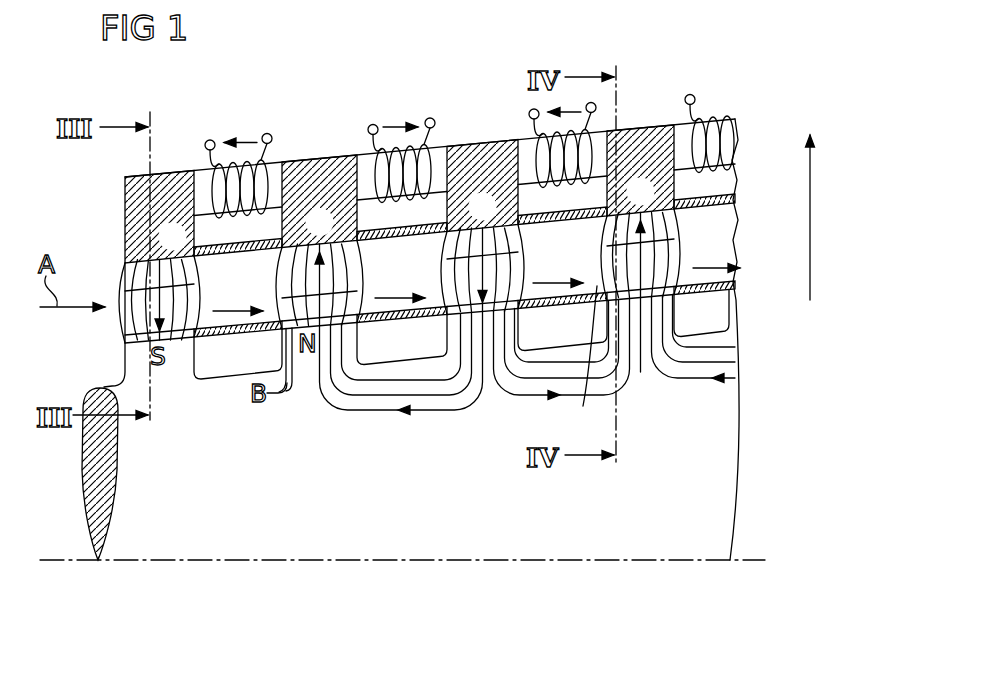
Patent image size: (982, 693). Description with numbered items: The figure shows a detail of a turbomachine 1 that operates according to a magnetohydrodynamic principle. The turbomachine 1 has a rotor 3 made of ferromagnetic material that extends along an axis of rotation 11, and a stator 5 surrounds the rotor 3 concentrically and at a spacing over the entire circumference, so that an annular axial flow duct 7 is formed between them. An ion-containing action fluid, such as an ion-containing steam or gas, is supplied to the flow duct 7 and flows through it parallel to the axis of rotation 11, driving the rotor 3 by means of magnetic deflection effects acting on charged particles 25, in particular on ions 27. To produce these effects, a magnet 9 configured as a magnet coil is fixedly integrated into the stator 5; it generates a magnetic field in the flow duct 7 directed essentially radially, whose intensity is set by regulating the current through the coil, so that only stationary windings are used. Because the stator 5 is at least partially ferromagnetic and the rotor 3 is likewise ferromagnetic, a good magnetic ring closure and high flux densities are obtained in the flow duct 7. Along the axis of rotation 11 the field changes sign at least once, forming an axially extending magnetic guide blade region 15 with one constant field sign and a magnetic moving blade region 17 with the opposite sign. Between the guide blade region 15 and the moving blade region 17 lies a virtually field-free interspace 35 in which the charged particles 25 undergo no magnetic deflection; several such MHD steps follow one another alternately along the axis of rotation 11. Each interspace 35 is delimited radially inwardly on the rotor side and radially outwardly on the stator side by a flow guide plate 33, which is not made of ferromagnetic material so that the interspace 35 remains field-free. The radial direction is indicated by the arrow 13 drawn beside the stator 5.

The turbomachine 1 is at (318, 100).
The rotor 3 is at (730, 462).
The stator 5 is at (483, 146).
The annular axial flow duct 7 is at (265, 340).
The magnet 9 is at (217, 152).
The axis of rotation 11 is at (563, 563).
The radial direction 13 is at (812, 232).
The magnetic guide blade region 15 is at (518, 252).
The magnetic moving blade region 17 is at (674, 239).
The charged particles 25 is at (222, 310).
The ions 27 is at (382, 296).
The flow guide plate 33 is at (737, 204).
The field-free interspace 35 is at (583, 362).